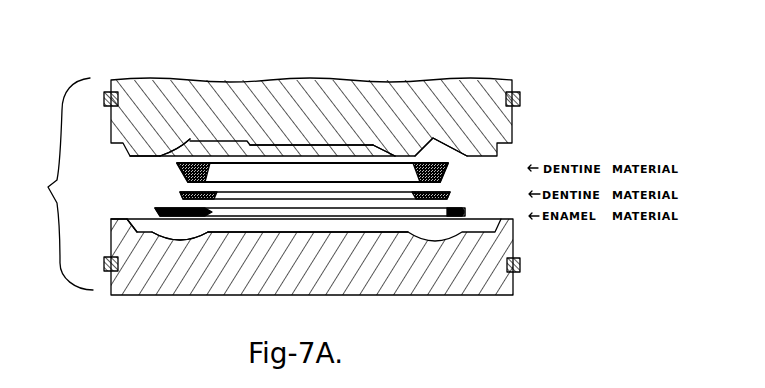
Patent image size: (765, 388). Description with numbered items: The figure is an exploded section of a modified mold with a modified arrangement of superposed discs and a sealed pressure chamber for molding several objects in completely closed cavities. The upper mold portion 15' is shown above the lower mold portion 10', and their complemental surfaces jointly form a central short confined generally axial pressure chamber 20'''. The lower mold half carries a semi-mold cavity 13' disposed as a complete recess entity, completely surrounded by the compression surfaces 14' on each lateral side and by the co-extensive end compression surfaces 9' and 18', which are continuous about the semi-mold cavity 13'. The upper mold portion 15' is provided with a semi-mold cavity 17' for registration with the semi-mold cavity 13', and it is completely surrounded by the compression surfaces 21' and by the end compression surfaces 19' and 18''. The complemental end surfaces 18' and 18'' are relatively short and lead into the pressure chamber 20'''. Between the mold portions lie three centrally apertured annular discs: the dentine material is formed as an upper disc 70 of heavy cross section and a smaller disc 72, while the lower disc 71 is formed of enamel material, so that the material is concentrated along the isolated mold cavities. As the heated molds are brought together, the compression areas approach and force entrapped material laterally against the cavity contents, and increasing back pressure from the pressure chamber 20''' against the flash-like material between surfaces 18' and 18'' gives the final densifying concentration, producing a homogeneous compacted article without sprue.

The upper mold portion 15' is at (310, 109).
The semi-mold cavity 17' is at (329, 100).
The compression surface 21' is at (347, 94).
The pressure chamber 20''' is at (311, 98).
The end compression surface 18'' is at (310, 83).
The end compression surface 19' is at (135, 168).
The dentine disc 70 is at (448, 172).
The dentine disc 72 is at (450, 196).
The enamel disc 71 is at (465, 211).
The lower mold portion 10' is at (293, 265).
The end compression surface 9' is at (127, 210).
The semi-mold cavity 13' is at (180, 281).
The compression surface 14' is at (249, 277).
The end compression surface 18' is at (315, 274).